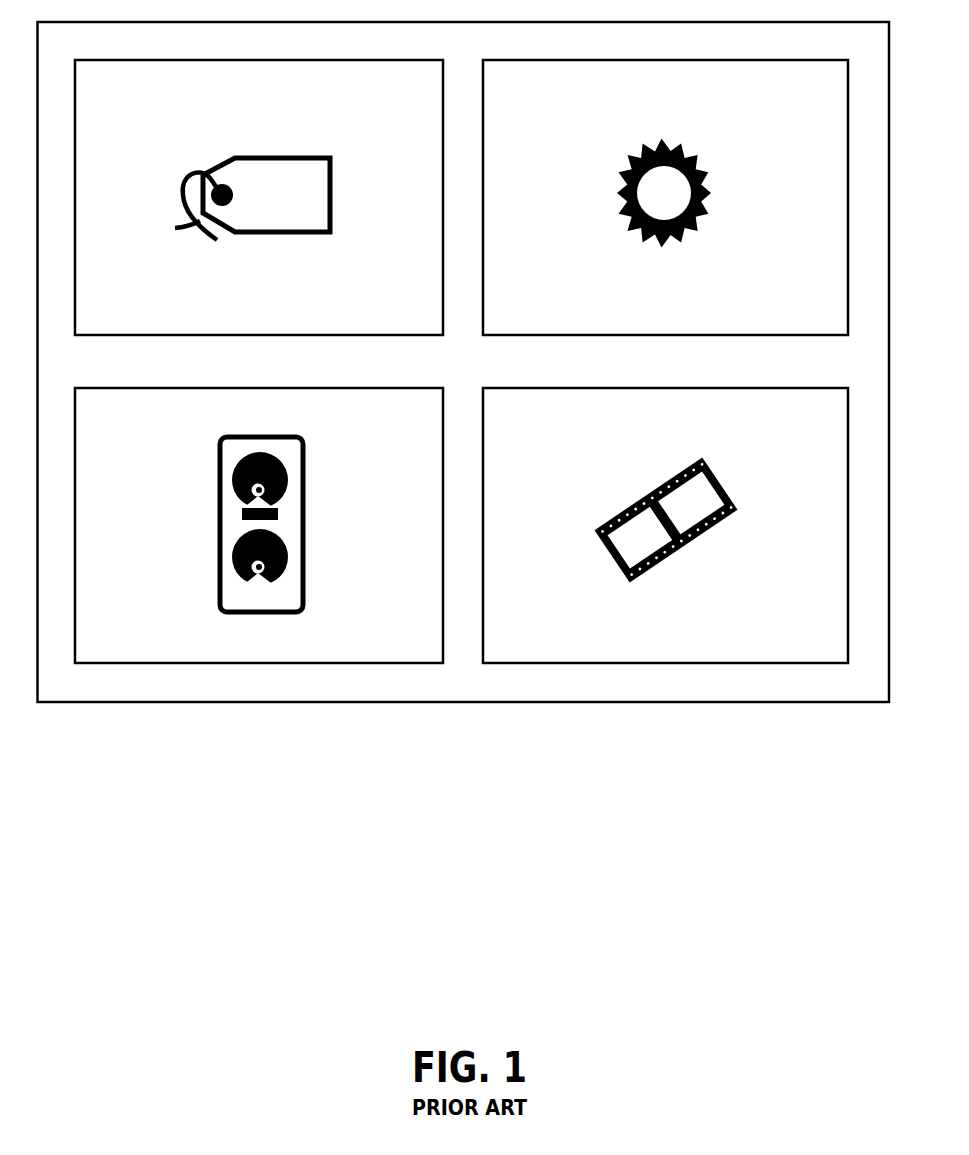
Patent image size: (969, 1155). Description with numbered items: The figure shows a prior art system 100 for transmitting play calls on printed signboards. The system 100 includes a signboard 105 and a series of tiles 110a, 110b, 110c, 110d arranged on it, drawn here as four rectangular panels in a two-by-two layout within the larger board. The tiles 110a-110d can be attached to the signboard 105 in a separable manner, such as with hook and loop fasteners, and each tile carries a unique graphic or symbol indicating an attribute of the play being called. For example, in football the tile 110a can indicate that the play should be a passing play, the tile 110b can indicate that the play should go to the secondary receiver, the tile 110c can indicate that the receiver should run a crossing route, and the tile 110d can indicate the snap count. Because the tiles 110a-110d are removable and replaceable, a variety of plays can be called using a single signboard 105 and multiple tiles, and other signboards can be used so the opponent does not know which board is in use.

The system 100 is at (229, 777).
The signboard 105 is at (464, 362).
The tile 110a is at (259, 197).
The tile 110b is at (665, 197).
The tile 110c is at (259, 525).
The tile 110d is at (665, 525).